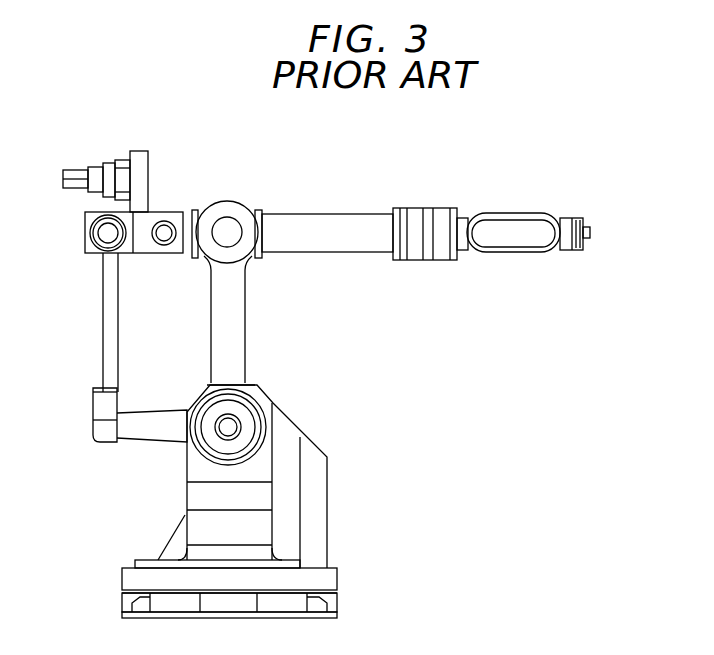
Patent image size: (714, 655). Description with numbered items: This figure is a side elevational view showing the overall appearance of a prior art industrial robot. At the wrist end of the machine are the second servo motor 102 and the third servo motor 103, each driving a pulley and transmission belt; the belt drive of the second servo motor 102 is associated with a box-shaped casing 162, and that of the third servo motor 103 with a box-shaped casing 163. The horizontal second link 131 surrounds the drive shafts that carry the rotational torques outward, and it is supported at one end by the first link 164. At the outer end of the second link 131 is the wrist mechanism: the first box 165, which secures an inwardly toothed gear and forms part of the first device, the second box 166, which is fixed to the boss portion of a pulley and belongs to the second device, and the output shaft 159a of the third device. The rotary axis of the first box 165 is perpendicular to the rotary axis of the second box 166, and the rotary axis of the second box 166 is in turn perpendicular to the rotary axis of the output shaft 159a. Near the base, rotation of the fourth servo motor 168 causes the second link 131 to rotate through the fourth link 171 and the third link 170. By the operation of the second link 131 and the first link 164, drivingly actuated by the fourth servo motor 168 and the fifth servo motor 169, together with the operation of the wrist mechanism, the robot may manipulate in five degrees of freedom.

The third servo motor 103 is at (120, 162).
The box-shaped casing 163 is at (150, 167).
The second servo motor 102 is at (93, 257).
The box-shaped casing 162 is at (160, 256).
The second link 131 is at (320, 214).
The first box 165 is at (508, 213).
The second box 166 is at (572, 218).
The output shaft 159a is at (590, 232).
The first link 164 is at (245, 328).
The fourth servo motor 168 is at (200, 450).
The fifth servo motor 169 is at (168, 527).
The third link 170 is at (103, 342).
The fourth link 171 is at (137, 442).